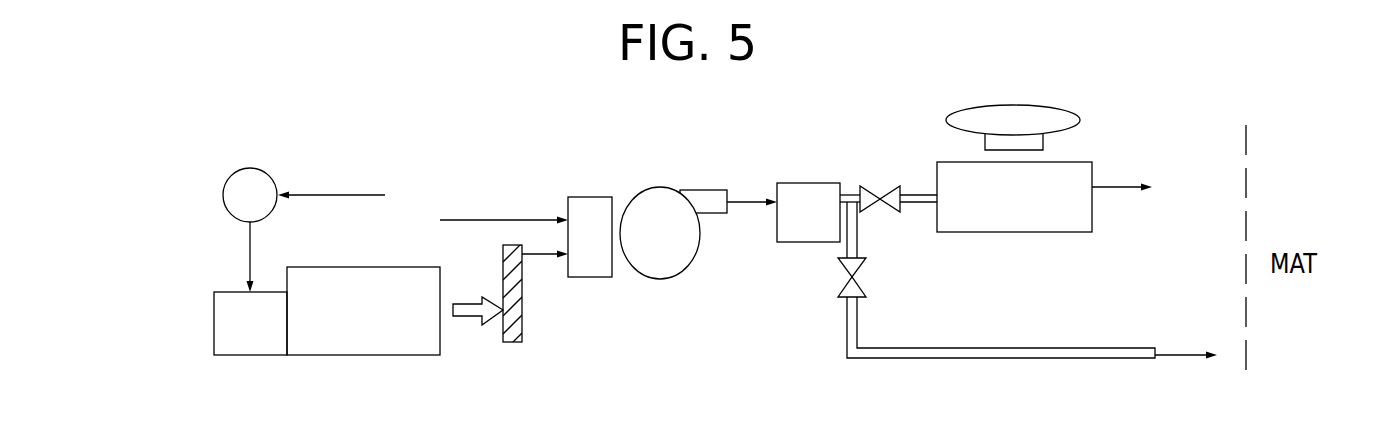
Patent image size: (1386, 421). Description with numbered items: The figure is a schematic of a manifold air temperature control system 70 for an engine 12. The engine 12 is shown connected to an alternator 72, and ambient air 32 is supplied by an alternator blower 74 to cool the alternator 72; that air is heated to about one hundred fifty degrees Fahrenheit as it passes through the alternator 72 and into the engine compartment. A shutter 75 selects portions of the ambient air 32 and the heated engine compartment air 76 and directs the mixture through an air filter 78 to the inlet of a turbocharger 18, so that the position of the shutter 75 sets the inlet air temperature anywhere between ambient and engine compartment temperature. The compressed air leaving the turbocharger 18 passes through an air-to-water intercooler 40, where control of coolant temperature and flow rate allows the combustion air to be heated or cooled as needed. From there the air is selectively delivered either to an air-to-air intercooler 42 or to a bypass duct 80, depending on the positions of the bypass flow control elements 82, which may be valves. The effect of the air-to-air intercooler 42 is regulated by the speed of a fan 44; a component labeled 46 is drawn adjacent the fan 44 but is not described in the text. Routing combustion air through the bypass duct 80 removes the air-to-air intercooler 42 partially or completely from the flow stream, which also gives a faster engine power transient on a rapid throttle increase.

The engine 12 is at (373, 330).
The turbocharger 18 is at (672, 247).
The ambient air 32 is at (470, 218).
The air-to-water intercooler 40 is at (820, 226).
The air-to-air intercooler 42 is at (1030, 206).
The fan 44 is at (1068, 110).
The reservoir outlet 46 is at (987, 142).
The manifold air temperature control system 70 is at (502, 158).
The alternator 72 is at (262, 337).
The alternator blower 74 is at (262, 207).
The shutter 75 is at (522, 293).
The heated engine compartment air 76 is at (470, 318).
The air filter 78 is at (602, 248).
The bypass duct 80 is at (977, 359).
The bypass flow control elements 82 is at (880, 212).